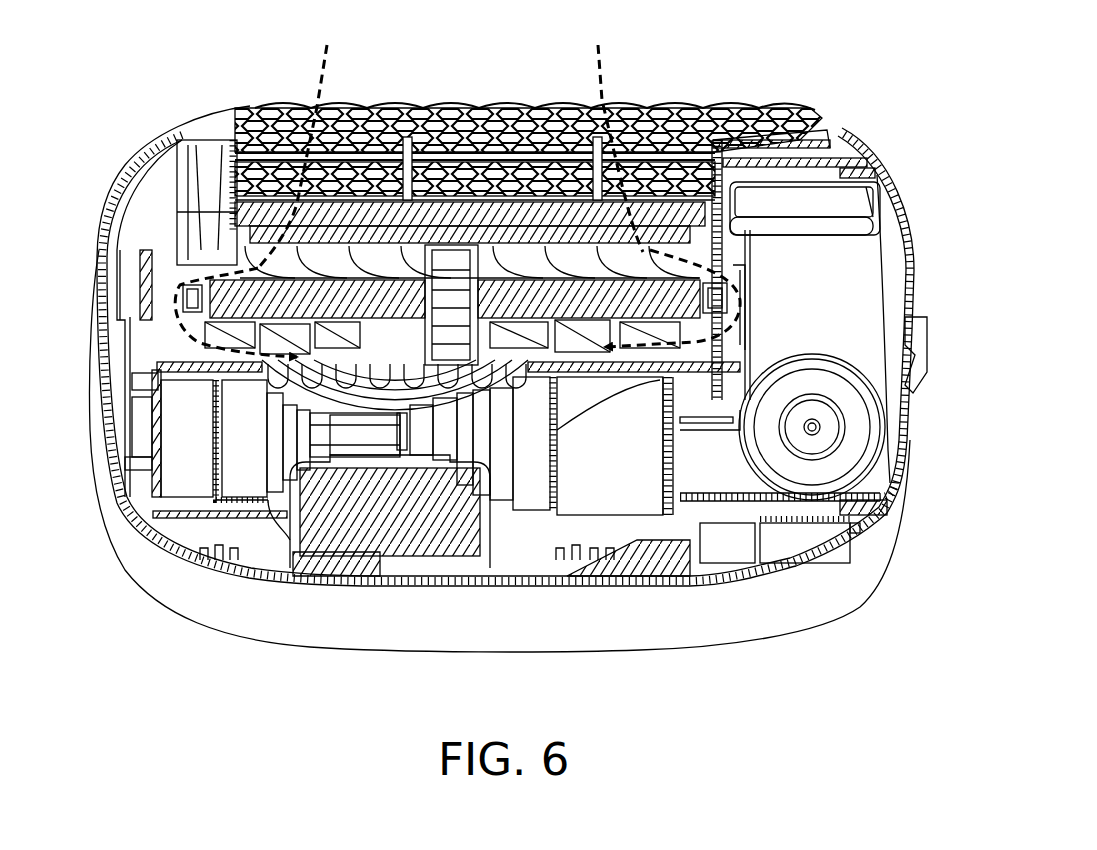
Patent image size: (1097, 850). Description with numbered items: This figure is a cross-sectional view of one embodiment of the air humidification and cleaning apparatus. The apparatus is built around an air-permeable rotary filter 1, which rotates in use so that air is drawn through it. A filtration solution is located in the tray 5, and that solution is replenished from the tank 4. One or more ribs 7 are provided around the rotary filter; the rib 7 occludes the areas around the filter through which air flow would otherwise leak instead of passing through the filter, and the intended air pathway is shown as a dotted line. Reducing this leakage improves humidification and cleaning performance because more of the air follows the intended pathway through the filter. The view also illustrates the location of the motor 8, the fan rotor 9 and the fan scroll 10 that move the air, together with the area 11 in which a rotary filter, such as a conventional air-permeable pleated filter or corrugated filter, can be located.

The air-permeable rotary filter 1 is at (230, 273).
The tank 4 is at (810, 318).
The tray 5 is at (173, 337).
The rib 7 is at (180, 353).
The motor 8 is at (330, 527).
The fan rotor 9 is at (497, 433).
The fan scroll 10 is at (610, 480).
The area in which a rotary filter can be located 11 is at (650, 200).